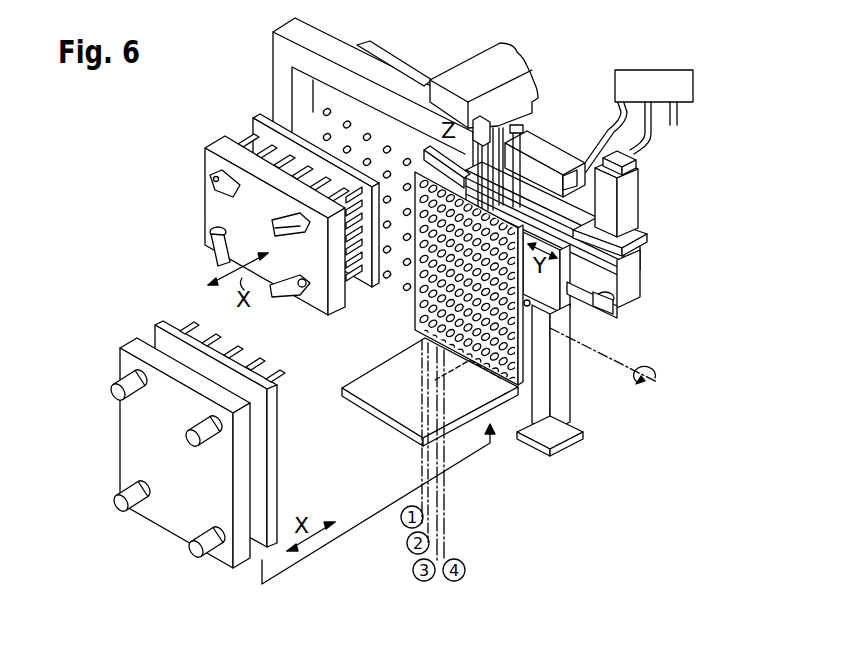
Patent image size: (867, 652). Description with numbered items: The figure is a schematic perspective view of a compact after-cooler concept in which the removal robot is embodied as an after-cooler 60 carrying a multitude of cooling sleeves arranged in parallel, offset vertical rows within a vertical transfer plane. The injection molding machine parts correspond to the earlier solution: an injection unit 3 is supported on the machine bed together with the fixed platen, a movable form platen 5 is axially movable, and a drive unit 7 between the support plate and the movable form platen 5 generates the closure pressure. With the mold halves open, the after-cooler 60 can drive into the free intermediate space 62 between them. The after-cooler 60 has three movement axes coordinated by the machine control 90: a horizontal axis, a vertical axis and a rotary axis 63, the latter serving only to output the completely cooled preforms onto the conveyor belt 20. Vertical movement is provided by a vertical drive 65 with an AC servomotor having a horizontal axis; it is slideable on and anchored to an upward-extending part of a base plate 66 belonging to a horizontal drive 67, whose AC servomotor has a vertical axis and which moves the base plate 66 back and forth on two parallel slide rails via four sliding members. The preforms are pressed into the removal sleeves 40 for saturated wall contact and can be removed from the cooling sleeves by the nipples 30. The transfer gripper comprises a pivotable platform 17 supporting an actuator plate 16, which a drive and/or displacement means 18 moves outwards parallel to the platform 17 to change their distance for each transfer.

The injection unit 3 is at (470, 62).
The movable form platen 5 is at (266, 212).
The drive unit 7 is at (214, 195).
The actuator plate 16 is at (216, 403).
The platform 17 is at (152, 436).
The drive and/or displacement means 18 is at (116, 392).
The conveyor belt 20 is at (390, 408).
The nipples 30 is at (270, 372).
The removal sleeves 40 is at (430, 345).
The after-cooler 60 is at (412, 302).
The free intermediate space 62 is at (317, 100).
The rotary axis 63 is at (593, 350).
The vertical drive 65 is at (543, 148).
The base plate 66 is at (553, 308).
The horizontal drive 67 is at (630, 188).
The machine control 90 is at (650, 78).